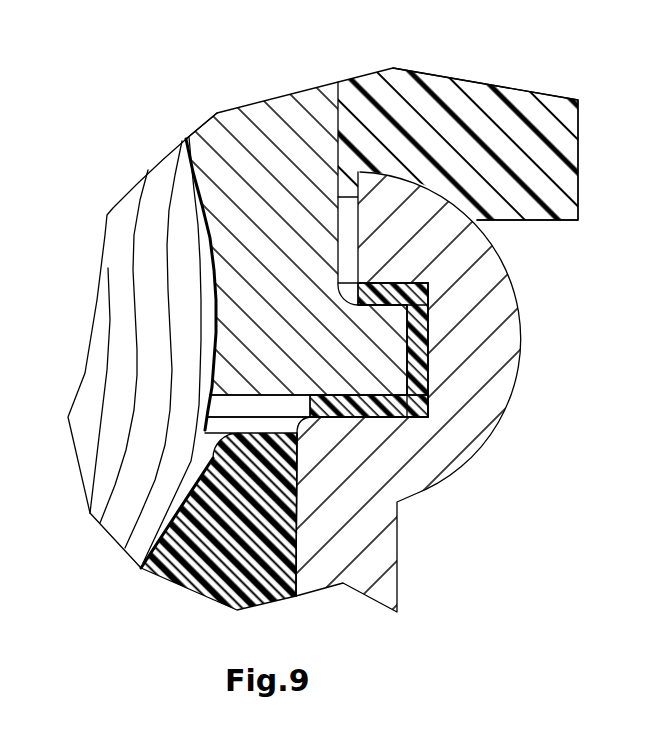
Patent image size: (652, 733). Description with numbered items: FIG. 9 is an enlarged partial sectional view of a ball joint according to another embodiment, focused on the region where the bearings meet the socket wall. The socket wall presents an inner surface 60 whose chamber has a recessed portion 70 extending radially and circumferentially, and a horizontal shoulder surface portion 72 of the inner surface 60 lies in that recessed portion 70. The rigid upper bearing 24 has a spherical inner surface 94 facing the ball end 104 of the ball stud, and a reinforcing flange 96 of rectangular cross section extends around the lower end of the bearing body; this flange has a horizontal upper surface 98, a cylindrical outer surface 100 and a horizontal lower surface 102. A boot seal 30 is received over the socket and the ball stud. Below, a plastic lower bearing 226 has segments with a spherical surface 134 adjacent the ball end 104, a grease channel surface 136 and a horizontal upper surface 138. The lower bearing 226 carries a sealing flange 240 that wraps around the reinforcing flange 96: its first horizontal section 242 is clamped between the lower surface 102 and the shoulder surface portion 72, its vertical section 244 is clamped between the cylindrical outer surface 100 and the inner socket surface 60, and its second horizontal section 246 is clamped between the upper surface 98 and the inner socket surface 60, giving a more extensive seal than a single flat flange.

The upper bearing 24 is at (269, 96).
The boot seal 30 is at (447, 94).
The horizontal shoulder surface portion 72 is at (353, 417).
The sealing flange 240 is at (440, 353).
The horizontal upper surface 98 is at (379, 290).
The second horizontal section 246 is at (416, 285).
The reinforcing flange 96 is at (420, 333).
The cylindrical outer surface 100 is at (386, 342).
The vertical section 244 is at (426, 376).
The first horizontal section 242 is at (367, 418).
The horizontal lower surface 102 is at (407, 418).
The recessed portion 70 is at (192, 329).
The spherical inner surface 94 is at (195, 192).
The ball end 104 is at (143, 242).
The spherical surface 134 is at (188, 498).
The horizontal upper surface 138 is at (210, 416).
The grease channel surface 136 is at (207, 450).
The inner surface 60 is at (213, 576).
The lower bearing 226 is at (312, 540).